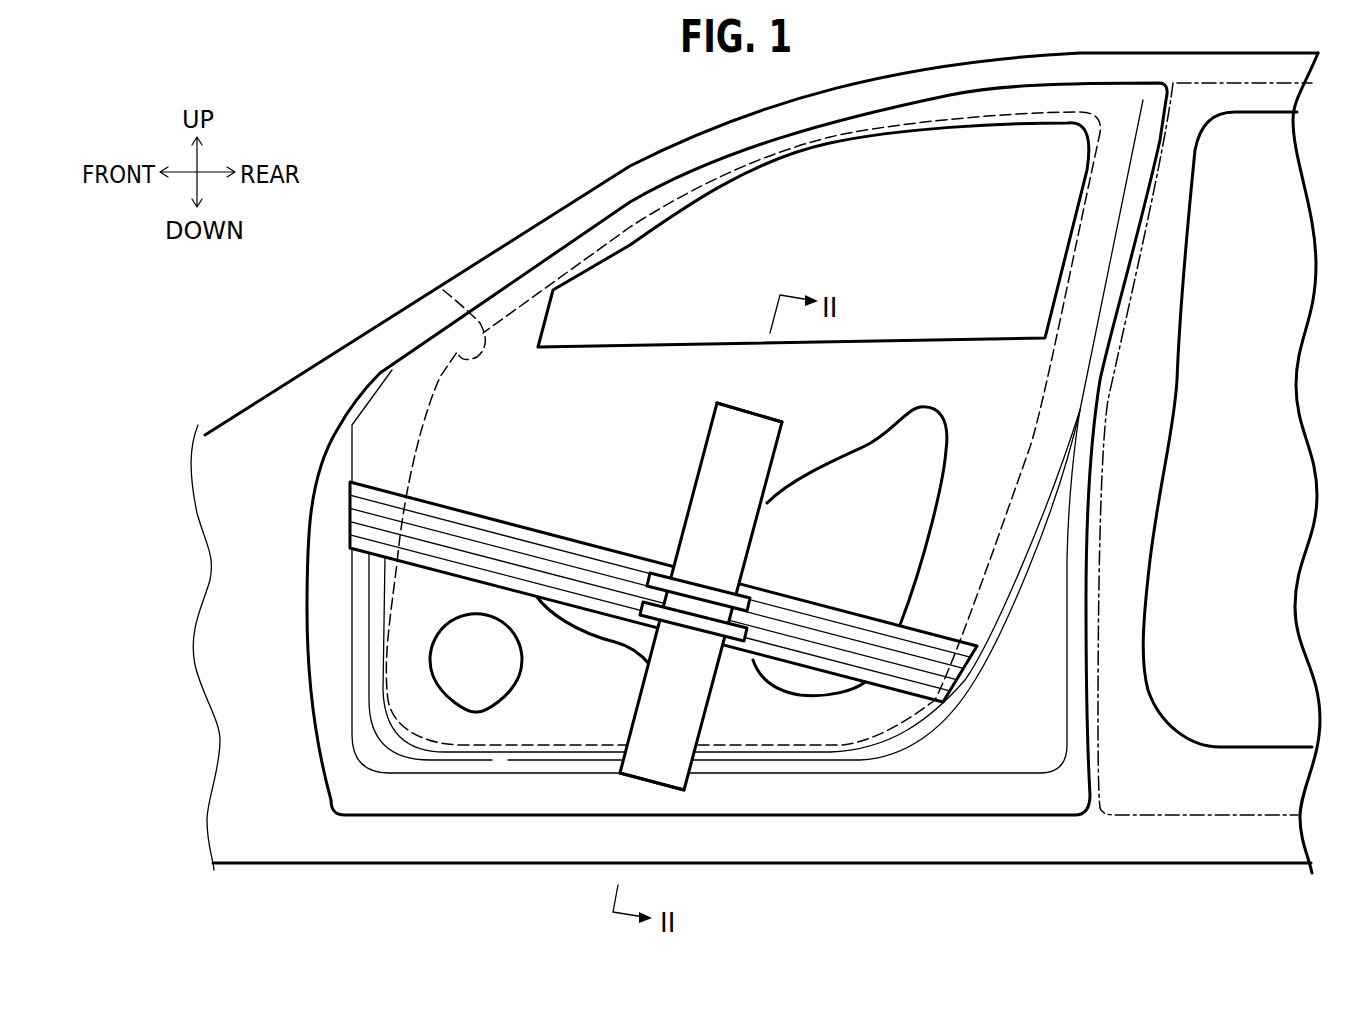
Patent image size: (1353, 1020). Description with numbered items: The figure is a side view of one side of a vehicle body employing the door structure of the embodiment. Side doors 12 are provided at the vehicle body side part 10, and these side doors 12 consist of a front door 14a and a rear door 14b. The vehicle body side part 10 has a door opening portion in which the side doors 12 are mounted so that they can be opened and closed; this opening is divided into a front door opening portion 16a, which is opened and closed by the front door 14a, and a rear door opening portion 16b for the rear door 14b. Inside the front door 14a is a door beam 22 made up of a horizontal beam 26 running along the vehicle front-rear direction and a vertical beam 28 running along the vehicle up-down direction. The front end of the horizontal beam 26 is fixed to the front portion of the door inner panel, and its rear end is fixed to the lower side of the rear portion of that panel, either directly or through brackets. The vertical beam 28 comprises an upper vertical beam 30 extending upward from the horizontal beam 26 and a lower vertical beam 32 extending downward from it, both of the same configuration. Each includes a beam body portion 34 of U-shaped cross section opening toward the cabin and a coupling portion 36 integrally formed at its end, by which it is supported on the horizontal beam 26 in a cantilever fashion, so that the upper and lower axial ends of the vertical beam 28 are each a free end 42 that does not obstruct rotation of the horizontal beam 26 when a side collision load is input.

The vehicle body side part 10 is at (600, 135).
The side door 12 is at (809, 506).
The front door 14a is at (756, 836).
The rear door 14b is at (1202, 825).
The front door opening portion 16a is at (443, 290).
The rear door opening portion 16b is at (1187, 247).
The door beam 22 is at (663, 592).
The horizontal beam 26 is at (589, 535).
The vertical beam 28 is at (794, 440).
The upper vertical beam 30 is at (698, 468).
The lower vertical beam 32 is at (644, 684).
The beam body portion 34 is at (683, 606).
The coupling portion 36 is at (718, 582).
The free end 42 is at (752, 404).